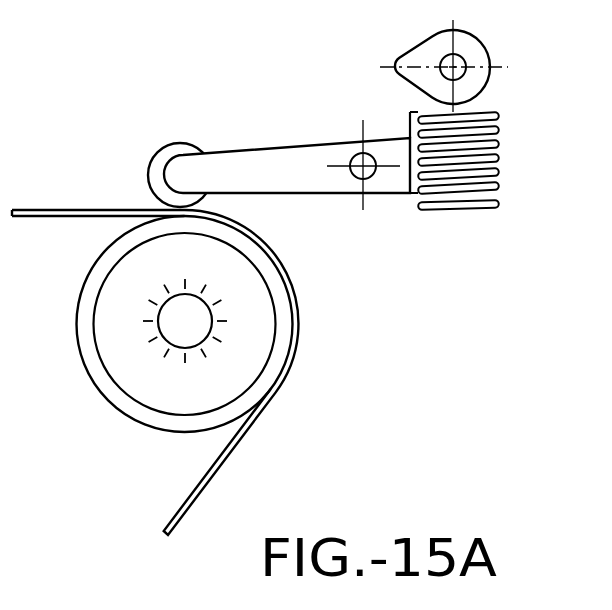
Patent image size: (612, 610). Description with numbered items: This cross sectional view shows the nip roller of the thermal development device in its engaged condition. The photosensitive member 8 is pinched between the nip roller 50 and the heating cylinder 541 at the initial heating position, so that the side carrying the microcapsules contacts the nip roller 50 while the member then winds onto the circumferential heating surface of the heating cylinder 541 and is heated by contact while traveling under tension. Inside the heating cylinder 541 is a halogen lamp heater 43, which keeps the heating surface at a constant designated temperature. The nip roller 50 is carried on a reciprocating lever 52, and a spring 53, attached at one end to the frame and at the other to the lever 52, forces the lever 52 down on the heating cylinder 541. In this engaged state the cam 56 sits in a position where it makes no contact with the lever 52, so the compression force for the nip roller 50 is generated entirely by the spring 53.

The photosensitive member 8 is at (63, 210).
The halogen lamp heater 43 is at (202, 324).
The nip roller 50 is at (178, 144).
The lever 52 is at (312, 160).
The spring 53 is at (497, 167).
The cam 56 is at (477, 49).
The heating cylinder 541 is at (263, 272).